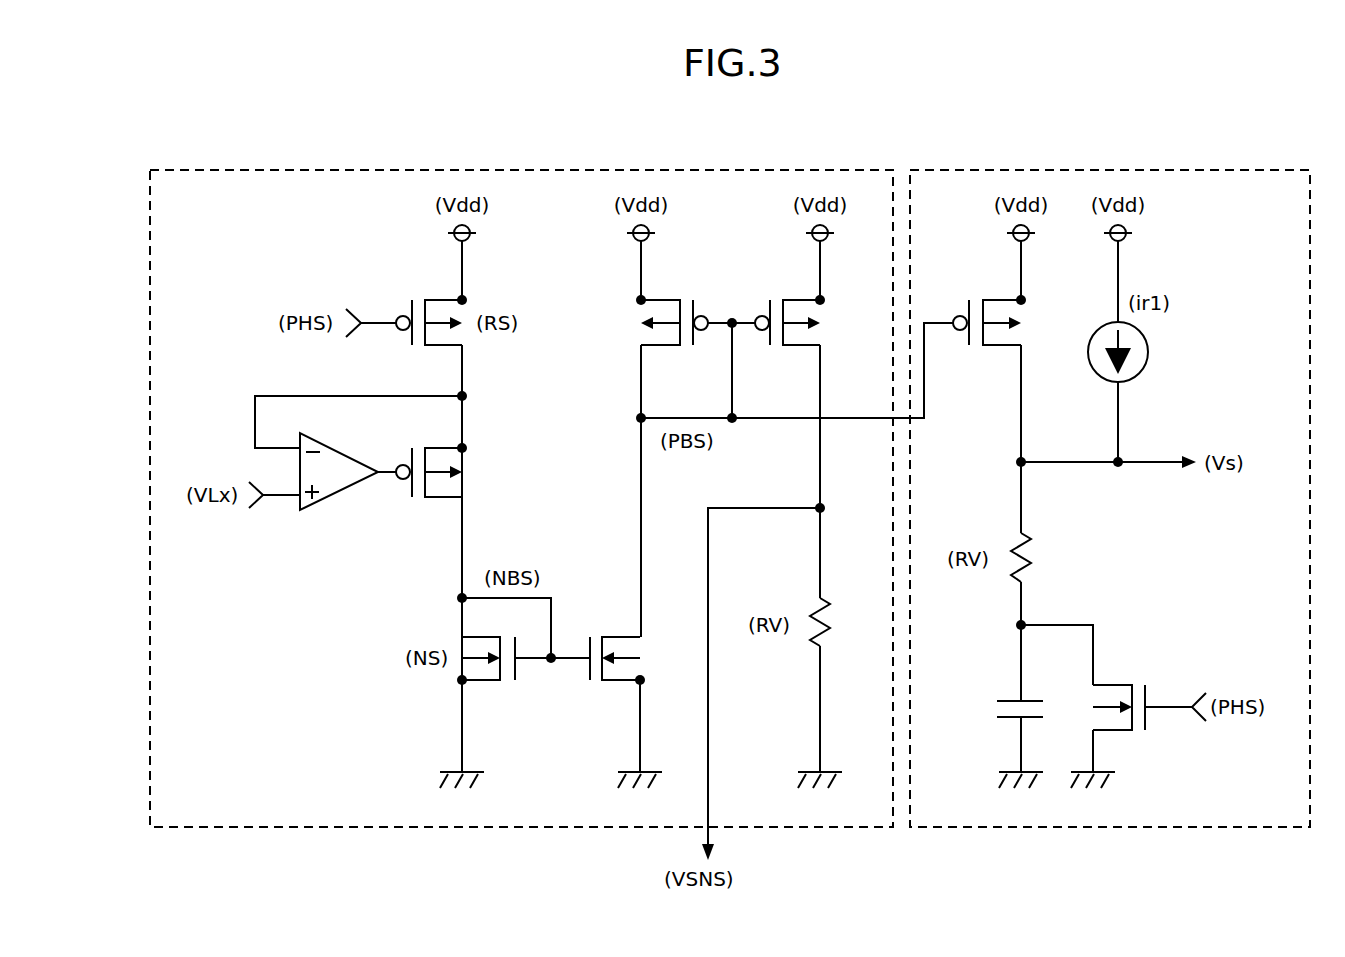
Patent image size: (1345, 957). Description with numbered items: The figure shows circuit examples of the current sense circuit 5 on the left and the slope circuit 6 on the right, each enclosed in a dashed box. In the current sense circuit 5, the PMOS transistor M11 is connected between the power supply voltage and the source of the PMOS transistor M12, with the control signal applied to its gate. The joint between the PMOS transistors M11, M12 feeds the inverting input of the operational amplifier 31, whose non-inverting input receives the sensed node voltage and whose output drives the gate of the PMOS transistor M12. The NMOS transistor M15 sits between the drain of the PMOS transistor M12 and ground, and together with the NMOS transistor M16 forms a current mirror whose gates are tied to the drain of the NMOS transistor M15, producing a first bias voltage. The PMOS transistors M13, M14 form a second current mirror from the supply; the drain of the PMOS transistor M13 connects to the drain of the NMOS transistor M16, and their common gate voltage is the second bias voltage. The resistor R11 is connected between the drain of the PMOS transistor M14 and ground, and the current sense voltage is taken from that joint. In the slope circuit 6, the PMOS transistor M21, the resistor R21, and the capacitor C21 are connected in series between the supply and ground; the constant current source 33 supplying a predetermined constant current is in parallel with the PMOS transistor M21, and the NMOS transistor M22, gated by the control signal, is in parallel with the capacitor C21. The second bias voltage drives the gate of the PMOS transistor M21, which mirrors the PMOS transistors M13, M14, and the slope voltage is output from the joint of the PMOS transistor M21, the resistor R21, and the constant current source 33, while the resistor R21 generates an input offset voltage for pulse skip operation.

The current sense circuit 5 is at (770, 141).
The slope circuit 6 is at (1239, 141).
The operational amplifier 31 is at (333, 500).
The constant current source 33 is at (1148, 352).
The PMOS transistor M11 is at (404, 293).
The PMOS transistor M12 is at (449, 472).
The PMOS transistor M13 is at (698, 293).
The PMOS transistor M14 is at (787, 293).
The NMOS transistor M15 is at (506, 680).
The NMOS transistor M16 is at (614, 680).
The resistor R11 is at (838, 606).
The PMOS transistor M21 is at (987, 309).
The resistor R21 is at (1048, 557).
The capacitor C21 is at (1005, 694).
The NMOS transistor M22 is at (1149, 692).